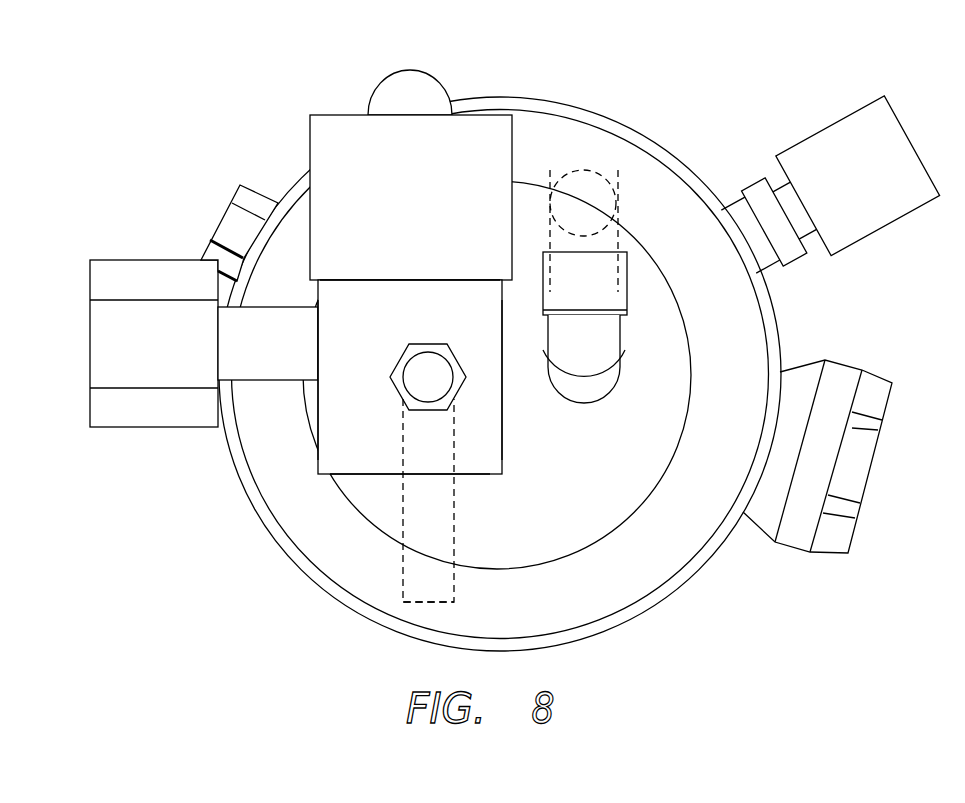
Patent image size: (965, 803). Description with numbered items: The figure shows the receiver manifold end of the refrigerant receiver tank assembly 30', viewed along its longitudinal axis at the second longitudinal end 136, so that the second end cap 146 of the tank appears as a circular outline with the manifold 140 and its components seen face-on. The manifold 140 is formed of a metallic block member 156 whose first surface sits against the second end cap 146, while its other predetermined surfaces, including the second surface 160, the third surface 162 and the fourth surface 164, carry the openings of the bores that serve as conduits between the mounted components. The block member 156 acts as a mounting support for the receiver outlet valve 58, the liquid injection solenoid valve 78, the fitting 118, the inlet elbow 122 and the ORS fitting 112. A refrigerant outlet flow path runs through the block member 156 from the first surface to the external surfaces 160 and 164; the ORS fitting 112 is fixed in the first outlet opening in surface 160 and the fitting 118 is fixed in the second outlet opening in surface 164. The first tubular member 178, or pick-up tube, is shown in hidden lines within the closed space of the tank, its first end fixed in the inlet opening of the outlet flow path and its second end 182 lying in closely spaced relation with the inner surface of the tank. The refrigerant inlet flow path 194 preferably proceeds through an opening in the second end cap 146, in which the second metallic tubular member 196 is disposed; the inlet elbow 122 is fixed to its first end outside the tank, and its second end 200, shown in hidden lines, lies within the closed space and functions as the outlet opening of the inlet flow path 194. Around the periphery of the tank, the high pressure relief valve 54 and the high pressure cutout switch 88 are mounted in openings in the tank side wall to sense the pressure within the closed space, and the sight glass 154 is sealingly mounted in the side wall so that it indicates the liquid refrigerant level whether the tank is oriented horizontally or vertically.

The receiver tank assembly 30' is at (500, 333).
The high pressure relief valve 54 is at (250, 178).
The receiver outlet valve 58 is at (408, 68).
The liquid injection solenoid valve 78 is at (312, 115).
The high pressure cutout switch 88 is at (880, 232).
The ORS fitting 112 is at (145, 260).
The fitting 118 is at (454, 351).
The inlet elbow 122 is at (607, 332).
The second longitudinal end 136 is at (620, 497).
The receiver manifold 140 is at (503, 437).
The second end cap 146 is at (608, 116).
The sight glass 154 is at (797, 552).
The metallic block member 156 is at (496, 457).
The second surface 160 is at (306, 455).
The third surface 162 is at (393, 262).
The fourth surface 164 is at (373, 460).
The first tubular member 178 is at (455, 512).
The second end 182 is at (433, 602).
The refrigerant inlet flow path 194 is at (600, 403).
The second metallic tubular member 196 is at (628, 243).
The second end 200 is at (568, 178).